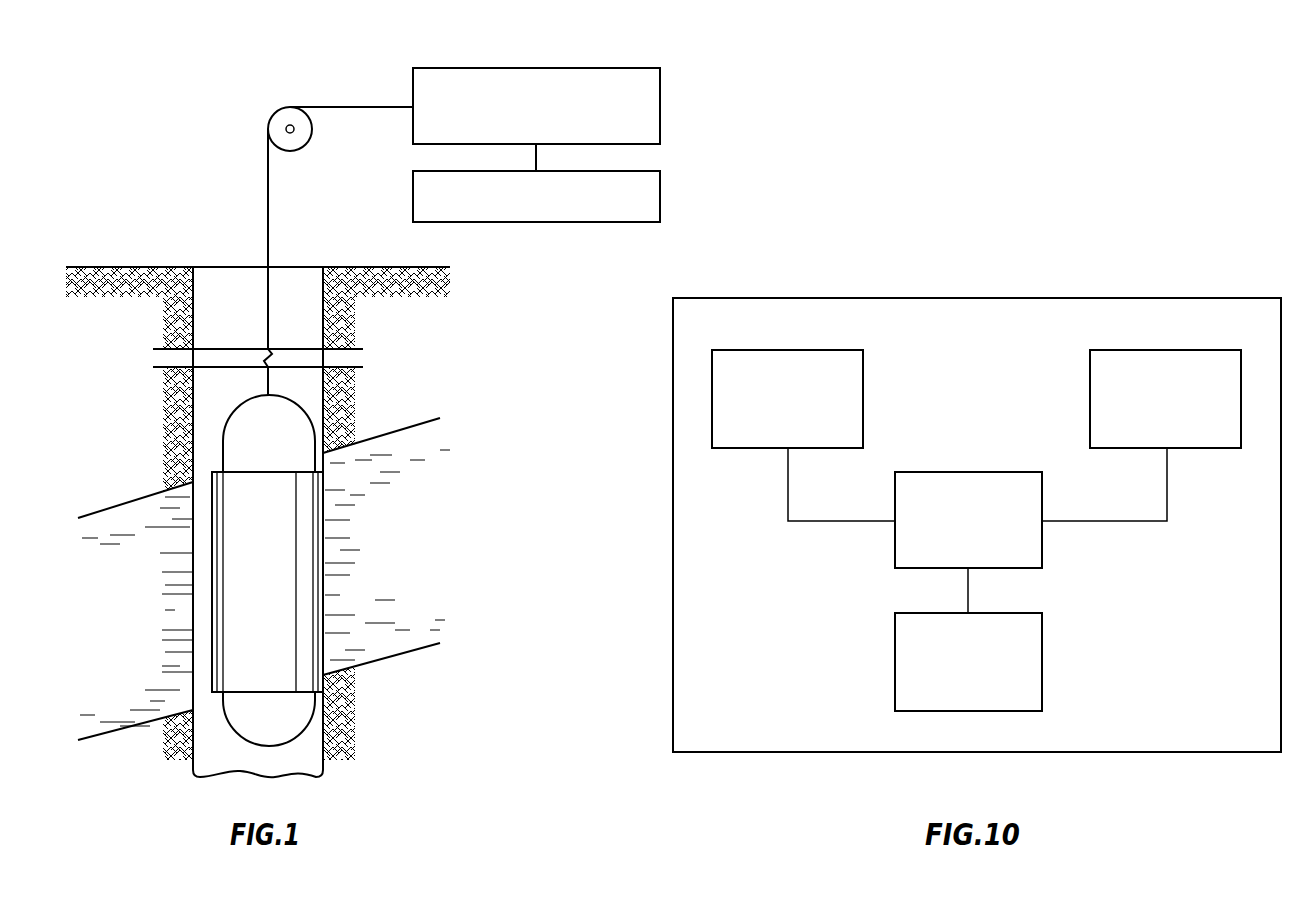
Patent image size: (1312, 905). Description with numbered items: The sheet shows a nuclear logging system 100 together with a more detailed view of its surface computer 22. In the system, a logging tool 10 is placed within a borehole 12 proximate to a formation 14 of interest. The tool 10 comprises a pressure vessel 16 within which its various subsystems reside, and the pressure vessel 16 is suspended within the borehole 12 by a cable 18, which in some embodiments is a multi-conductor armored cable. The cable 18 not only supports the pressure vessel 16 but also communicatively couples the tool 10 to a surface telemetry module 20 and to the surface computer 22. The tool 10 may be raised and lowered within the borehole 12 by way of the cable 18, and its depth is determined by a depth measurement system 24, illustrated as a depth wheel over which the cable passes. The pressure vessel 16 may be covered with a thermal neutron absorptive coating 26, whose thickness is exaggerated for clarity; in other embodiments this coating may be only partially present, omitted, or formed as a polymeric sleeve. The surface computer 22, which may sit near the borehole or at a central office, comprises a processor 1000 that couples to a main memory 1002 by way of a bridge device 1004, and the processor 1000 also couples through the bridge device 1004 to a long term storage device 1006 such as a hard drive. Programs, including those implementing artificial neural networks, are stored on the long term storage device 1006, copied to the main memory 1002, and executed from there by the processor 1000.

In FIG. 1, the nuclear logging system 100 is at (150, 156).
In FIG. 1, the logging tool 10 is at (216, 418).
In FIG. 1, the borehole 12 is at (245, 309).
In FIG. 1, the formation 14 is at (408, 547).
In FIG. 1, the pressure vessel 16 is at (282, 454).
In FIG. 1, the cable 18 is at (268, 208).
In FIG. 1, the surface telemetry module 20 is at (660, 97).
In FIG. 1, the surface computer 22 is at (660, 197).
In FIG. 10, the surface computer 22 is at (1200, 298).
In FIG. 1, the depth measurement system 24 is at (307, 143).
In FIG. 1, the thermal neutron absorptive coating 26 is at (267, 677).
In FIG. 10, the processor 1000 is at (813, 426).
In FIG. 10, the main memory 1002 is at (1191, 438).
In FIG. 10, the bridge device 1004 is at (991, 548).
In FIG. 10, the long term storage device 1006 is at (991, 699).